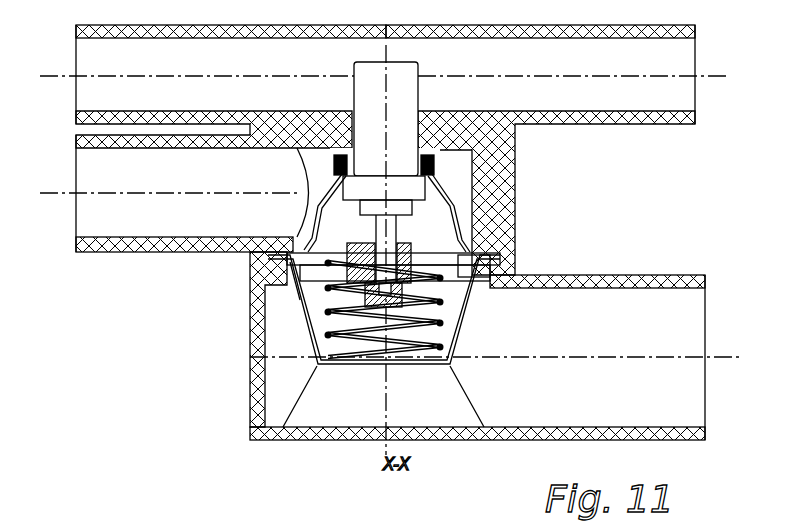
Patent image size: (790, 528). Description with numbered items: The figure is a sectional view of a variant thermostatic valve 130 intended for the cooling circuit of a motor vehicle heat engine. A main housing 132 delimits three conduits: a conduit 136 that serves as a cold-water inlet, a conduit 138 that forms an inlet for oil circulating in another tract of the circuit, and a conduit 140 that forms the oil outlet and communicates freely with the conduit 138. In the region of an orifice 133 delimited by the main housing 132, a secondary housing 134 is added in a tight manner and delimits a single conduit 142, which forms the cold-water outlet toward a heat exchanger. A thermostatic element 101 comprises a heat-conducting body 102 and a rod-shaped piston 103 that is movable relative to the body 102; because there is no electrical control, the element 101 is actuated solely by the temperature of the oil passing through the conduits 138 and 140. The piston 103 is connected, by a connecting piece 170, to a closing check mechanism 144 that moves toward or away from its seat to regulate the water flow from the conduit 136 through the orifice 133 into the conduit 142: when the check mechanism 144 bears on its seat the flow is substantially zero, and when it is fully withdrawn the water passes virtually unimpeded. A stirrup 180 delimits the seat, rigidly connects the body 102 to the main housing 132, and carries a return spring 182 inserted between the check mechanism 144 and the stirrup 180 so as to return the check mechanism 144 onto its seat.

The thermostatic element 101 is at (424, 98).
The body 102 is at (352, 85).
The piston 103 is at (297, 237).
The thermostatic valve 130 is at (215, 302).
The main housing 132 is at (518, 192).
The orifice 133 is at (515, 270).
The secondary housing 134 is at (652, 274).
The conduit 136 is at (170, 193).
The conduit 138 is at (213, 86).
The conduit 140 is at (558, 74).
The conduit 142 is at (495, 357).
The closing check mechanism 144 is at (305, 303).
The connecting piece 170 is at (465, 296).
The stirrup 180 is at (480, 319).
The return spring 182 is at (467, 323).